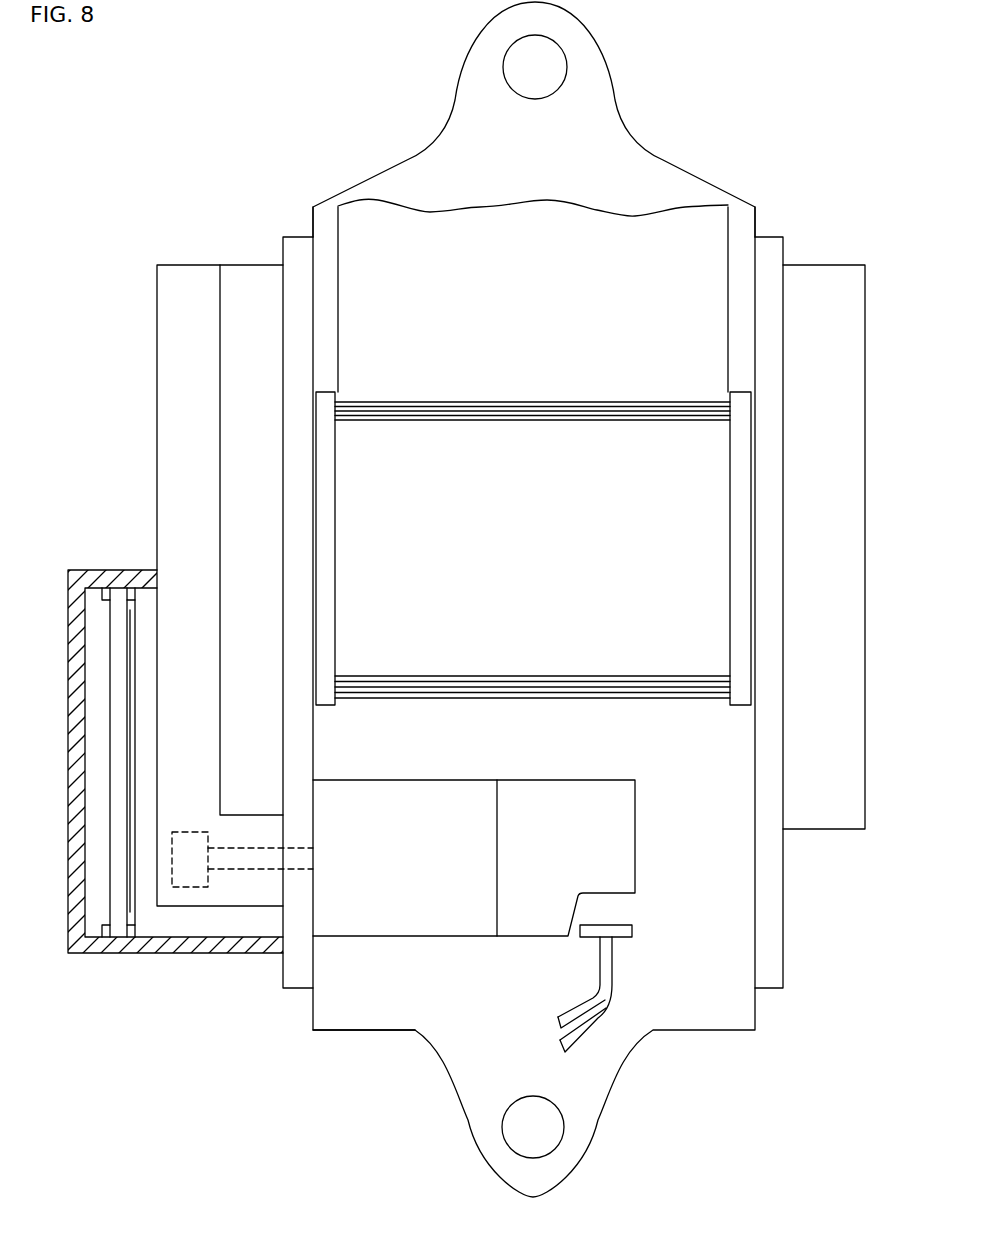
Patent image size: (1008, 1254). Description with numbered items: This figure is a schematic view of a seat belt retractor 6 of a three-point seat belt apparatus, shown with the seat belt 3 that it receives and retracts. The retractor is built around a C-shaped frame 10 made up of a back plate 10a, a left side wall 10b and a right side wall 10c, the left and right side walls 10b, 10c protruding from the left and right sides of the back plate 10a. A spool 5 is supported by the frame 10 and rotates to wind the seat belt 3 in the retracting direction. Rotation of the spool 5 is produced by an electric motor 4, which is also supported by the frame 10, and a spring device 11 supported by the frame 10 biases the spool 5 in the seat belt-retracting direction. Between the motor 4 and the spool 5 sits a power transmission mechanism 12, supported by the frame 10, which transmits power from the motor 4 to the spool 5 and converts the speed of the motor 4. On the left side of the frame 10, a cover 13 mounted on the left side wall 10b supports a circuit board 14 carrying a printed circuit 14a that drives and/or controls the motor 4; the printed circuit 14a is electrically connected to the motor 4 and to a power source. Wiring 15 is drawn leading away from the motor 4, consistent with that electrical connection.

The seat belt 3 is at (580, 230).
The electric motor 4 is at (643, 885).
The spool 5 is at (533, 548).
The seat belt retractor 6 is at (285, 197).
The frame 10 is at (657, 183).
The back plate 10a is at (440, 992).
The left side wall 10b is at (298, 950).
The right side wall 10c is at (773, 950).
The spring device 11 is at (252, 272).
The power transmission mechanism 12 is at (188, 273).
The cover 13 is at (167, 943).
The circuit board 14 is at (117, 888).
The printed circuit 14a is at (130, 640).
The cable 15 is at (587, 988).